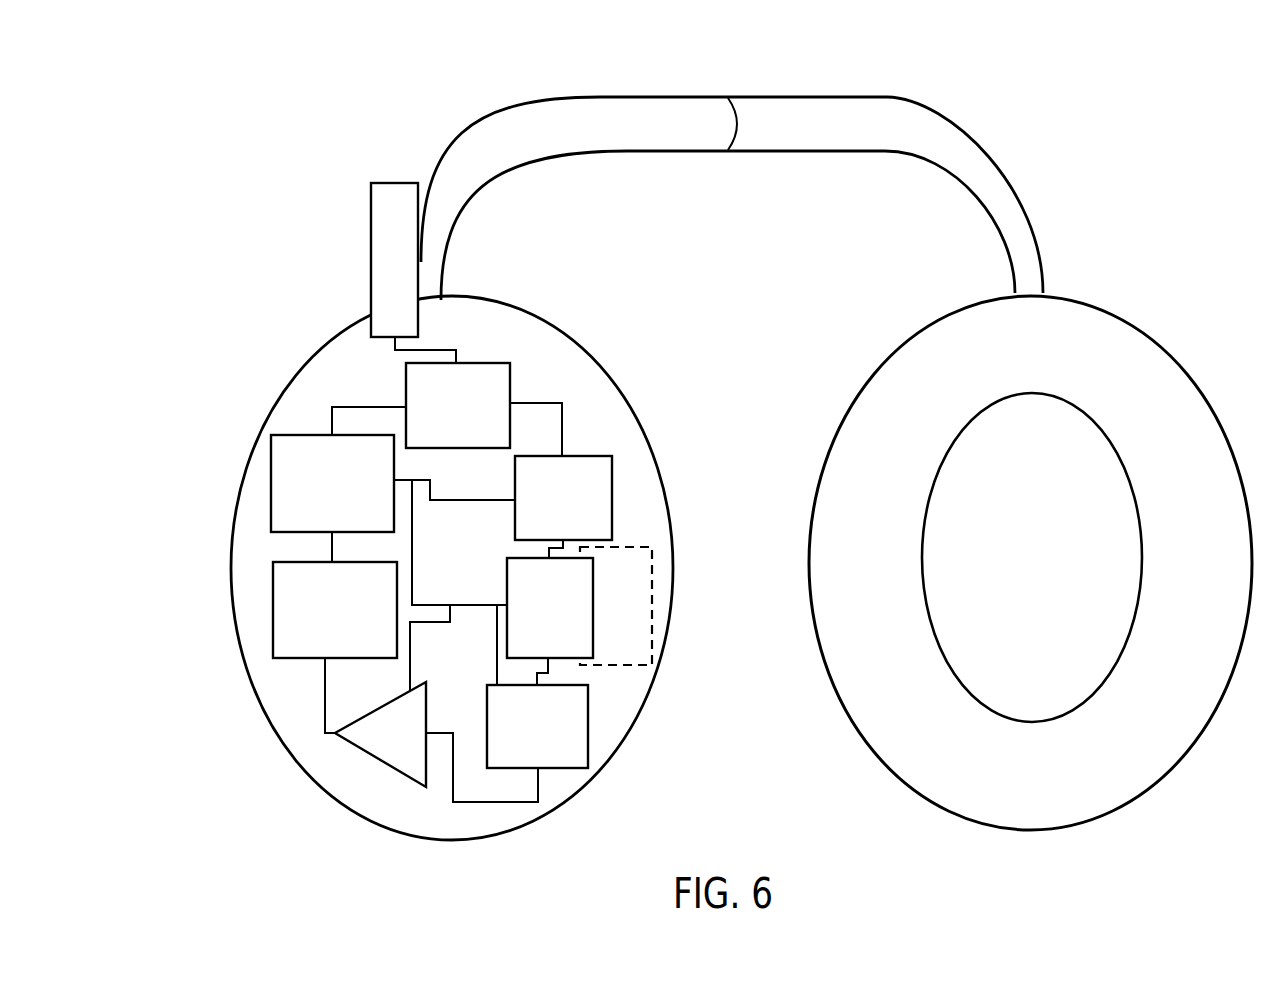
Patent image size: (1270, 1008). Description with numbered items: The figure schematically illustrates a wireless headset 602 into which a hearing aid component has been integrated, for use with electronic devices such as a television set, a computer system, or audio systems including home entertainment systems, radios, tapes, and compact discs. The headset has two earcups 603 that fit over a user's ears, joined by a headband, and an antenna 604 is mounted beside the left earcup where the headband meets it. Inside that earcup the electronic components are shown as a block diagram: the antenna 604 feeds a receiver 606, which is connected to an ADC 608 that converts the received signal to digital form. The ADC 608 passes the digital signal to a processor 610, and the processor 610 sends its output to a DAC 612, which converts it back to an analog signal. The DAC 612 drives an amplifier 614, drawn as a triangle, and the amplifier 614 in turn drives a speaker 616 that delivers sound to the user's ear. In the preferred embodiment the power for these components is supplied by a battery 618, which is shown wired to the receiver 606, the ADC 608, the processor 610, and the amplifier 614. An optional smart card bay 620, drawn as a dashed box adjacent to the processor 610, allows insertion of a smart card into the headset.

The wireless headset 602 is at (1112, 86).
The earcups 603 is at (290, 385).
The antenna 604 is at (371, 218).
The receiver 606 is at (439, 438).
The ADC 608 is at (544, 528).
The processor 610 is at (529, 641).
The DAC 612 is at (518, 754).
The amplifier 614 is at (374, 746).
The speaker 616 is at (316, 641).
The battery 618 is at (313, 513).
The smart card bay 620 is at (601, 639).